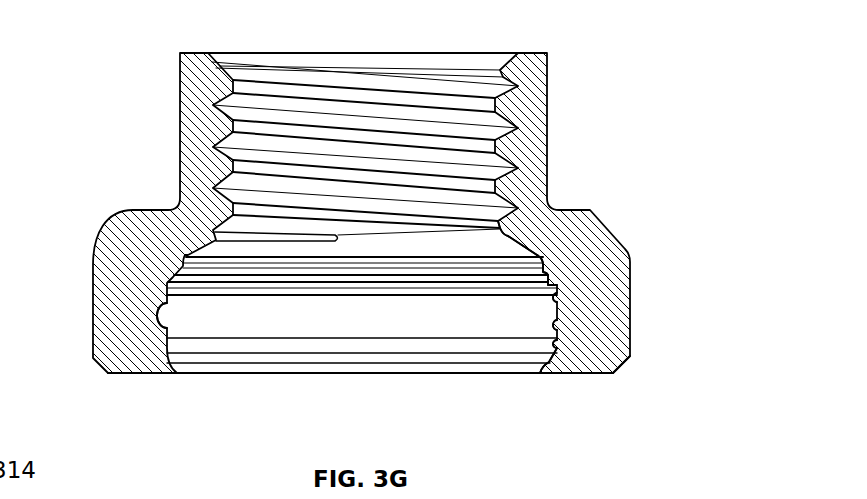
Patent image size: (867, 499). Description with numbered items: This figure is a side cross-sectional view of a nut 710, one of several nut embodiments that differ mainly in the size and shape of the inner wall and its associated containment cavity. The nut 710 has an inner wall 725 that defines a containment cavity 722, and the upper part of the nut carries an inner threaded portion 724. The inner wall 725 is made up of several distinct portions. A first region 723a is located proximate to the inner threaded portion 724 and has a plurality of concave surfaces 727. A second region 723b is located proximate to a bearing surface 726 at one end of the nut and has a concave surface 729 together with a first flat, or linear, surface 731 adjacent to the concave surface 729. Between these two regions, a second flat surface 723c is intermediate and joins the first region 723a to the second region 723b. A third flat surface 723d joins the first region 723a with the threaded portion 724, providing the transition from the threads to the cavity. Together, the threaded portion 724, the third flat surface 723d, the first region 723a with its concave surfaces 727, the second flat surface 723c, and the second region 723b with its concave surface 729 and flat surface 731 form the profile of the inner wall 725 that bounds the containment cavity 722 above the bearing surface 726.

The nut 710 is at (137, 28).
The containment cavity 722 is at (252, 345).
The first region 723a is at (547, 273).
The second region 723b is at (565, 340).
The second flat surface 723c is at (562, 338).
The third flat surface 723d is at (508, 232).
The inner threaded portion 724 is at (458, 90).
The inner wall 725 is at (172, 330).
The bearing surface 726 is at (133, 373).
The concave surfaces 727 is at (562, 310).
The concave surface 729 is at (561, 358).
The first flat surface 731 is at (541, 361).